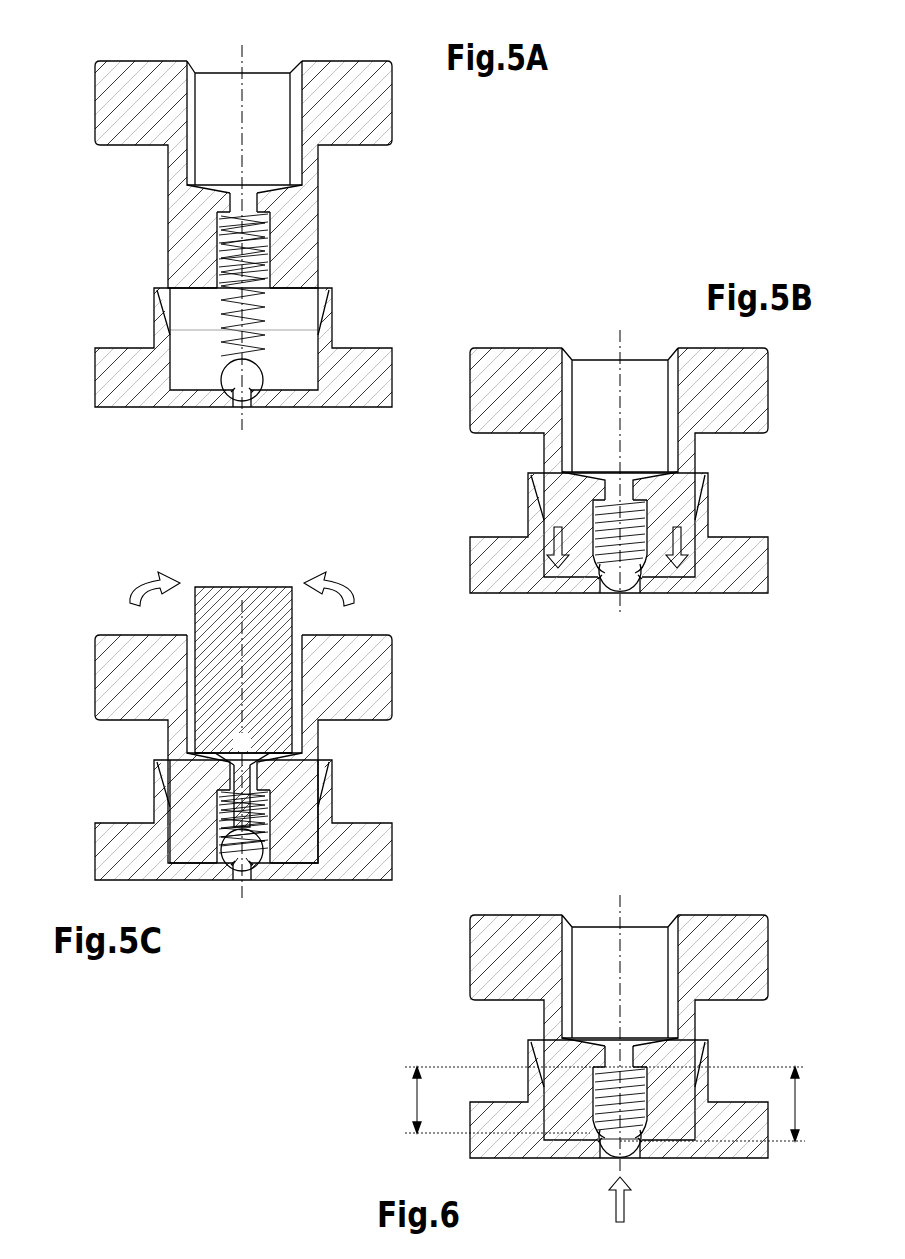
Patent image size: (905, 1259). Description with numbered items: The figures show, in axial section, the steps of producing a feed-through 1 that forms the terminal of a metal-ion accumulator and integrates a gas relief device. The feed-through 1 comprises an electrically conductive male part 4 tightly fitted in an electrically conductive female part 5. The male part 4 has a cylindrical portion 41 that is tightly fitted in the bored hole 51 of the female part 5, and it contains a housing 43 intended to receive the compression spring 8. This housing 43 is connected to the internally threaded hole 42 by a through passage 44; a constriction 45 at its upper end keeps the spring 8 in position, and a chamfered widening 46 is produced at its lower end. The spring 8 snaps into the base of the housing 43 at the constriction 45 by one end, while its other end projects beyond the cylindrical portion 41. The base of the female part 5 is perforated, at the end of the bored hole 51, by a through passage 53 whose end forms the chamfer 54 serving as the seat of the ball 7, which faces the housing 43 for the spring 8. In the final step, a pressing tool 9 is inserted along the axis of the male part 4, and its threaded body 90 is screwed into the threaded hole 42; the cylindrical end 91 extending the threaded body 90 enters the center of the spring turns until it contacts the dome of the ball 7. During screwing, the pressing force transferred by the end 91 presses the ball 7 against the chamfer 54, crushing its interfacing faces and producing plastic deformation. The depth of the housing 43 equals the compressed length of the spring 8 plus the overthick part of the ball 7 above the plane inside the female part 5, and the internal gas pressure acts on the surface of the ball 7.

In FIG. 5A, the feed-through 1 is at (440, 220).
In FIG. 5B, the feed-through 1 is at (650, 318).
In FIG. 5C, the feed-through 1 is at (440, 768).
In FIG. 6, the feed-through 1 is at (445, 968).
In FIG. 5A, the male part 4 is at (380, 100).
In FIG. 5B, the male part 4 is at (752, 385).
In FIG. 5C, the male part 4 is at (380, 685).
In FIG. 6, the male part 4 is at (752, 950).
In FIG. 5A, the cylindrical portion 41 is at (172, 158).
In FIG. 5A, the internally threaded hole 42 is at (190, 100).
In FIG. 5B, the internally threaded hole 42 is at (620, 410).
In FIG. 5C, the internally threaded hole 42 is at (205, 748).
In FIG. 6, the internally threaded hole 42 is at (642, 940).
In FIG. 5A, the housing 43 is at (217, 242).
In FIG. 6, the housing 43 is at (548, 1100).
In FIG. 6, the through passage 44 is at (600, 1050).
In FIG. 5A, the constriction 45 is at (288, 238).
In FIG. 5A, the chamfered widening 46 is at (222, 268).
In FIG. 6, the chamfered widening 46 is at (600, 1140).
In FIG. 5A, the female part 5 is at (105, 375).
In FIG. 5B, the female part 5 is at (492, 555).
In FIG. 5C, the female part 5 is at (380, 845).
In FIG. 6, the female part 5 is at (735, 1150).
In FIG. 5A, the bored hole 51 is at (160, 380).
In FIG. 5A, the through passage 53 is at (250, 405).
In FIG. 5B, the through passage 53 is at (628, 592).
In FIG. 5C, the through passage 53 is at (250, 880).
In FIG. 6, the through passage 53 is at (628, 1158).
In FIG. 5A, the chamfer 54 is at (236, 404).
In FIG. 5B, the chamfer 54 is at (604, 590).
In FIG. 5C, the chamfer 54 is at (236, 878).
In FIG. 6, the chamfer 54 is at (610, 1158).
In FIG. 5A, the ball 7 is at (258, 380).
In FIG. 5B, the ball 7 is at (650, 575).
In FIG. 5C, the ball 7 is at (262, 848).
In FIG. 6, the ball 7 is at (642, 1135).
In FIG. 5A, the compression spring 8 is at (278, 272).
In FIG. 5B, the compression spring 8 is at (668, 532).
In FIG. 5C, the compression spring 8 is at (305, 815).
In FIG. 6, the compression spring 8 is at (625, 1060).
In FIG. 5C, the pressing tool 9 is at (250, 600).
In FIG. 5C, the threaded body 90 is at (215, 680).
In FIG. 5C, the cylindrical end 91 is at (232, 783).